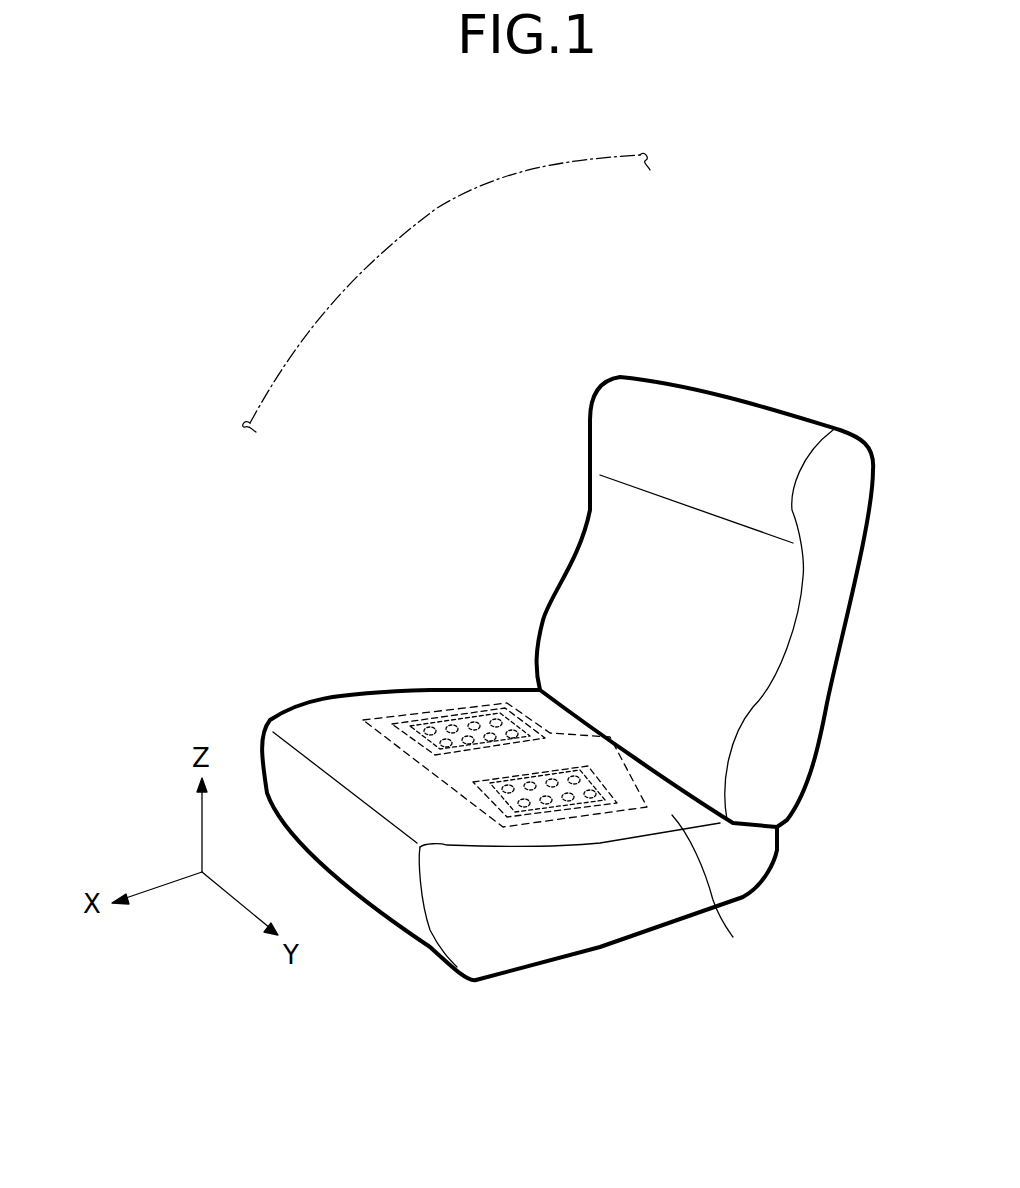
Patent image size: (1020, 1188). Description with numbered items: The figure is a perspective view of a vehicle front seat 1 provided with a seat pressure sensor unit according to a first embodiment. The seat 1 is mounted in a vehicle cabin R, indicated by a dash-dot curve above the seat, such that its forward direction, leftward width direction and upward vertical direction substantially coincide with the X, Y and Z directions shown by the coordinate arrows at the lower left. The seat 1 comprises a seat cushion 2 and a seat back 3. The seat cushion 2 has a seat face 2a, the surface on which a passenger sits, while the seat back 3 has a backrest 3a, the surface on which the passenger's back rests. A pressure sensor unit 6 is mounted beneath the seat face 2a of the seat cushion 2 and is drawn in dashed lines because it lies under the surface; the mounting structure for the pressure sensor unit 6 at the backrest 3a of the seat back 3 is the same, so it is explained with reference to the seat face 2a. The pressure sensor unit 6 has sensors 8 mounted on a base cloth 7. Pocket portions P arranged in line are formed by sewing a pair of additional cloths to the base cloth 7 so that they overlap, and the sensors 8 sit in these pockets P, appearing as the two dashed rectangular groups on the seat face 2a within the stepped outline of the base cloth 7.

The vehicle front seat 1 is at (518, 557).
The seat cushion 2 is at (507, 786).
The seat face 2a is at (655, 905).
The seat back 3 is at (735, 602).
The backrest 3a is at (720, 707).
The pressure sensor unit 6 is at (387, 752).
The base cloth 7 is at (503, 693).
The sensor 8 is at (450, 723).
The pocket portion P is at (498, 715).
The vehicle cabin R is at (437, 202).